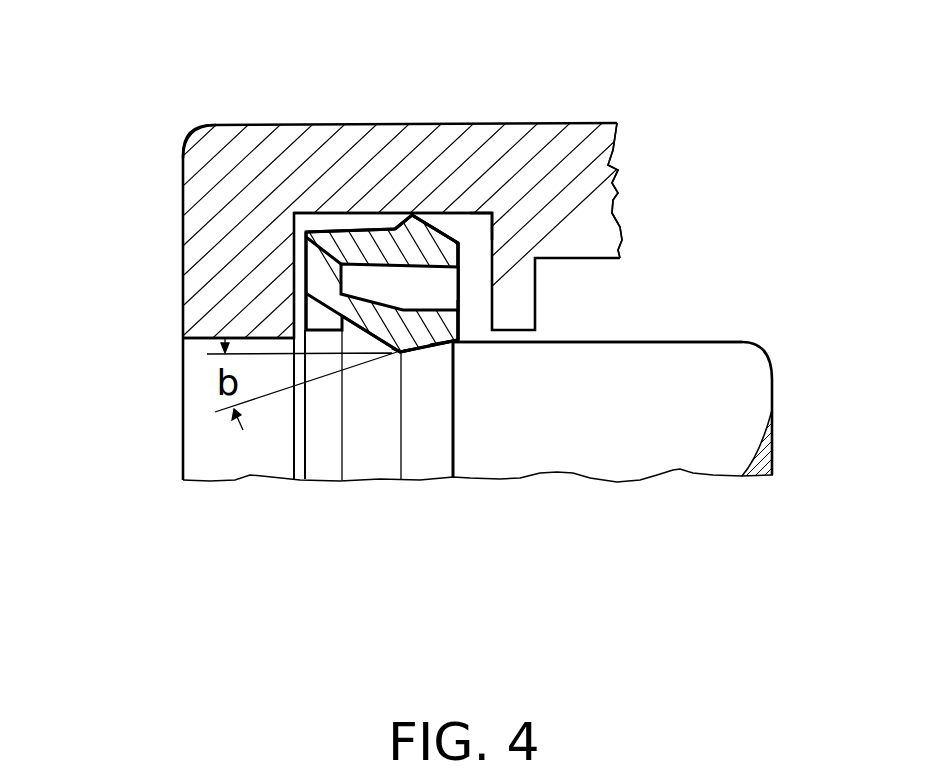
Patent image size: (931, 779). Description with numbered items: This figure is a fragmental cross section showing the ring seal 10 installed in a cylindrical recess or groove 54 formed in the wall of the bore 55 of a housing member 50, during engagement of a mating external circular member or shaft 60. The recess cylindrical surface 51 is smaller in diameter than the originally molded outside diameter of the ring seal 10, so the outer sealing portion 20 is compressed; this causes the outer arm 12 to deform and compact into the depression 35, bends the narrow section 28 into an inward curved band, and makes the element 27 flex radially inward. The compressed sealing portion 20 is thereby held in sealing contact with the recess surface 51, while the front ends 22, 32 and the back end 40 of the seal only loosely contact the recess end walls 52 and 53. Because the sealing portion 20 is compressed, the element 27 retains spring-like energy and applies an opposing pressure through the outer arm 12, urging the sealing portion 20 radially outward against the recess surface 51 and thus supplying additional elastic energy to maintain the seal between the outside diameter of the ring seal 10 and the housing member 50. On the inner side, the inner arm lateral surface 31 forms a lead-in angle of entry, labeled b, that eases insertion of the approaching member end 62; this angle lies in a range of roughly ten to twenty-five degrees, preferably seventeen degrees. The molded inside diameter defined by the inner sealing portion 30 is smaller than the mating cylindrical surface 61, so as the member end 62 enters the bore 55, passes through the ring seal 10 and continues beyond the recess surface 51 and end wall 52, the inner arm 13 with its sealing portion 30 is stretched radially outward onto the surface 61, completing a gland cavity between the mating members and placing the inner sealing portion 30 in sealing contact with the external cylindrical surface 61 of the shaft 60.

The ring seal 10 is at (315, 313).
The outer arm 12 is at (617, 123).
The inner arm 13 is at (452, 335).
The sealing portion 20 is at (413, 215).
The front end 22 is at (439, 233).
The element 27 is at (491, 213).
The narrow section 28 is at (380, 240).
The inner sealing portion 30 is at (400, 352).
The inner arm lateral surface 31 is at (402, 353).
The front end 32 is at (457, 322).
The depression 35 is at (437, 286).
The back end 40 is at (310, 282).
The housing member 50 is at (183, 142).
The recess cylindrical surface 51 is at (322, 214).
The recess end wall 52 is at (303, 243).
The recess end wall 53 is at (459, 246).
The recess 54 is at (213, 125).
The bore 55 is at (195, 342).
The shaft 60 is at (655, 416).
The cylindrical surface 61 is at (642, 341).
The member end 62 is at (452, 453).